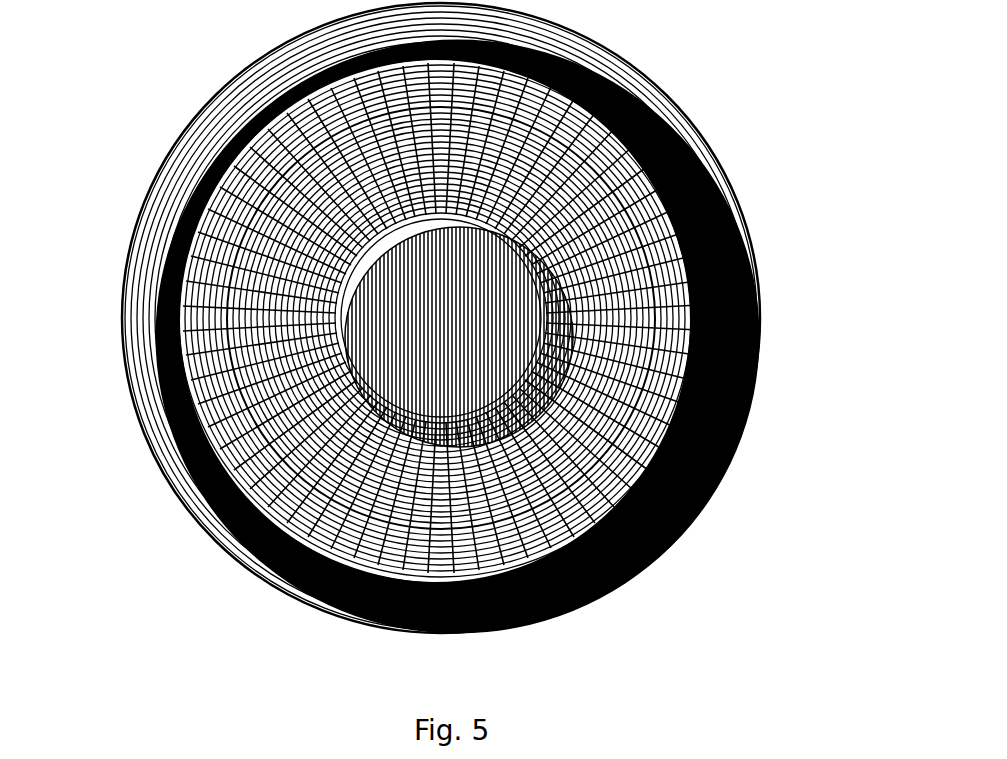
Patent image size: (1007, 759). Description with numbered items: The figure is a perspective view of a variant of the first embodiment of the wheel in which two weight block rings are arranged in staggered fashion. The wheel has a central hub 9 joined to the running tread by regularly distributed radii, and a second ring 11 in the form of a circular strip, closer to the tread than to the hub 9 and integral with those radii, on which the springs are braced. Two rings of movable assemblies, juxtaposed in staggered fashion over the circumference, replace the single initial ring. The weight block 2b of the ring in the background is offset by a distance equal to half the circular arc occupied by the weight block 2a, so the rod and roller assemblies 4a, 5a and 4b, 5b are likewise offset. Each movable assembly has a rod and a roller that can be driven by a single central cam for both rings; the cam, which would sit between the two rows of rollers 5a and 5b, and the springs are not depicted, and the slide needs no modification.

The weight block 2a is at (653, 558).
The weight block 2b is at (713, 495).
The rod 4a is at (723, 472).
The rod 4b is at (740, 452).
The roller 5a is at (740, 435).
The roller 5b is at (750, 417).
The central hub 9 is at (180, 225).
The second ring 11 is at (598, 64).